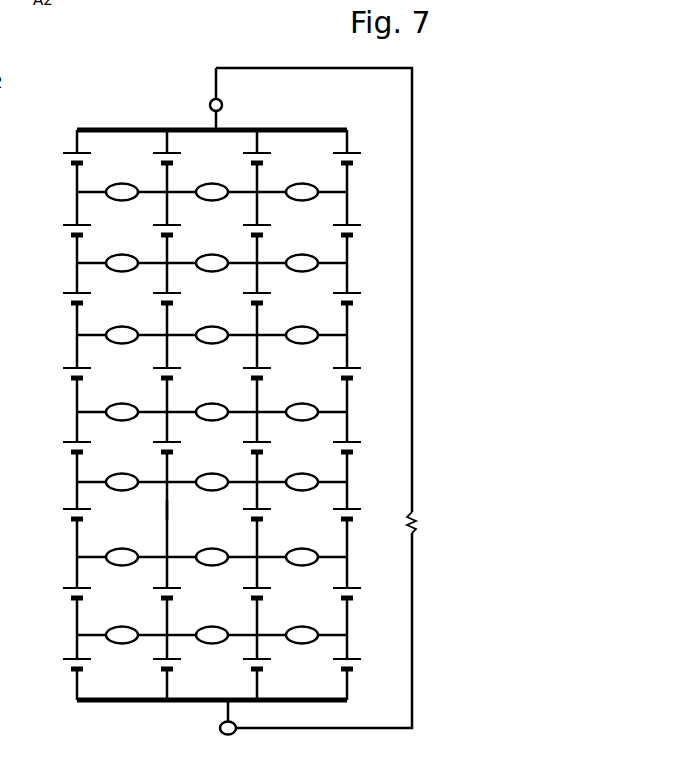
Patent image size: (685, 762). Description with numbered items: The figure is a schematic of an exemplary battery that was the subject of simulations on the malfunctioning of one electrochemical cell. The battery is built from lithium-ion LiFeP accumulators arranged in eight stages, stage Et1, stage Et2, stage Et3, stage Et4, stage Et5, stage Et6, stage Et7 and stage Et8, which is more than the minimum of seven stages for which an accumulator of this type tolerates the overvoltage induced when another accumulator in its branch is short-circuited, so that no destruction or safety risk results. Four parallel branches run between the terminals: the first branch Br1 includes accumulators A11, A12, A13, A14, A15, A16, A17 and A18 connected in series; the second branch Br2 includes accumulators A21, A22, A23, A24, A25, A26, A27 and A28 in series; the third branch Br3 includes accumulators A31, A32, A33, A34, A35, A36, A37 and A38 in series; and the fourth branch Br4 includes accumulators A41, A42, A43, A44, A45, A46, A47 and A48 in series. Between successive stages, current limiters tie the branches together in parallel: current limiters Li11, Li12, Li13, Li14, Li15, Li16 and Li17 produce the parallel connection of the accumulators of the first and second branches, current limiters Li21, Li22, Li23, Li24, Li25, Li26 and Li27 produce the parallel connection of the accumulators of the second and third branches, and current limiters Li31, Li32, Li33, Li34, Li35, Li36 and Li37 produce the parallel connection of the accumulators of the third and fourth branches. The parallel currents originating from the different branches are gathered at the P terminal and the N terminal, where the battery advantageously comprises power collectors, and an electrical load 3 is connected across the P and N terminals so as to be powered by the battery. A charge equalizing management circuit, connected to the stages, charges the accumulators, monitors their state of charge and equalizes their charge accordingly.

The electrical load 3 is at (408, 524).
The P terminal P is at (211, 99).
The N terminal N is at (219, 717).
The first branch Br1 is at (77, 405).
The second branch Br2 is at (167, 405).
The third branch Br3 is at (257, 405).
The fourth branch Br4 is at (347, 405).
The stage Et1 is at (174, 168).
The stage Et2 is at (174, 239).
The stage Et3 is at (174, 309).
The stage Et4 is at (174, 385).
The stage Et5 is at (174, 457).
The stage Et6 is at (174, 528).
The stage Et7 is at (174, 607).
The stage Et8 is at (181, 659).
The accumulator A11 is at (65, 154).
The accumulator A12 is at (65, 226).
The accumulator A13 is at (65, 294).
The accumulator A14 is at (65, 369).
The accumulator A15 is at (65, 443).
The accumulator A16 is at (65, 510).
The accumulator A17 is at (65, 589).
The accumulator A18 is at (65, 660).
The accumulator A21 is at (160, 151).
The accumulator A22 is at (160, 223).
The accumulator A23 is at (160, 291).
The accumulator A24 is at (160, 366).
The accumulator A25 is at (160, 440).
The accumulator A26 is at (154, 510).
The accumulator A27 is at (160, 586).
The accumulator A28 is at (160, 657).
The accumulator A31 is at (250, 151).
The accumulator A32 is at (250, 223).
The accumulator A33 is at (250, 291).
The accumulator A34 is at (250, 366).
The accumulator A35 is at (250, 440).
The accumulator A36 is at (250, 507).
The accumulator A37 is at (250, 586).
The accumulator A38 is at (250, 657).
The accumulator A41 is at (340, 151).
The accumulator A42 is at (340, 223).
The accumulator A43 is at (340, 291).
The accumulator A44 is at (340, 366).
The accumulator A45 is at (340, 440).
The accumulator A46 is at (340, 507).
The accumulator A47 is at (340, 586).
The accumulator A48 is at (340, 657).
The current limiter Li11 is at (122, 181).
The current limiter Li12 is at (122, 252).
The current limiter Li13 is at (122, 322).
The current limiter Li14 is at (122, 399).
The current limiter Li15 is at (122, 470).
The current limiter Li16 is at (122, 545).
The current limiter Li17 is at (122, 621).
The current limiter Li21 is at (212, 181).
The current limiter Li22 is at (212, 252).
The current limiter Li23 is at (212, 322).
The current limiter Li24 is at (212, 399).
The current limiter Li25 is at (212, 470).
The current limiter Li26 is at (212, 545).
The current limiter Li27 is at (212, 621).
The current limiter Li31 is at (302, 181).
The current limiter Li32 is at (302, 252).
The current limiter Li33 is at (302, 322).
The current limiter Li34 is at (302, 399).
The current limiter Li35 is at (302, 470).
The current limiter Li36 is at (302, 545).
The current limiter Li37 is at (302, 621).